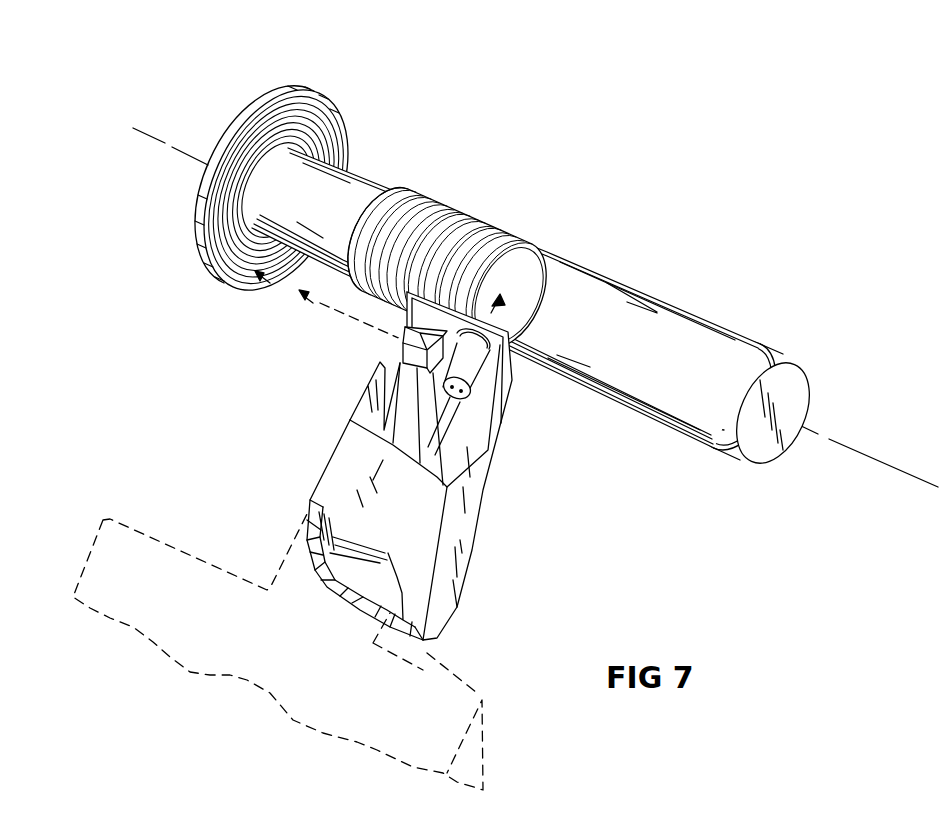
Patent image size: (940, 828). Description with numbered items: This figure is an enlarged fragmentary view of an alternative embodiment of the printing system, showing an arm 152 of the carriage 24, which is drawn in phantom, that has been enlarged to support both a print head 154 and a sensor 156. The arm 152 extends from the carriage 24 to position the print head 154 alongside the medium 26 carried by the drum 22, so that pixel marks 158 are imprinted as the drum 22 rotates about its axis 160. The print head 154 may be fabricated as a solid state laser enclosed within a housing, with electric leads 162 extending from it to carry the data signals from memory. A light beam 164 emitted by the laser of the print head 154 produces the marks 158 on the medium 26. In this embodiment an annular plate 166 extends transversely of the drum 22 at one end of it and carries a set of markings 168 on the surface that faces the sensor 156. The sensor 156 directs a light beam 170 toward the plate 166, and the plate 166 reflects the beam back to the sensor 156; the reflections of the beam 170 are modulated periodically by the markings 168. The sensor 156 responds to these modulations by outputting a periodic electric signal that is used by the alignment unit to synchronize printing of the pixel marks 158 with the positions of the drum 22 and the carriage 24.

The drum 22 is at (371, 175).
The carriage 24 is at (142, 528).
The medium 26 is at (647, 296).
The arm 152 is at (463, 588).
The print head 154 is at (470, 372).
The sensor 156 is at (402, 347).
The pixel marks 158 is at (512, 262).
The axis 160 is at (826, 436).
The electric leads 162 is at (433, 455).
The light beam 164 is at (493, 312).
The annular plate 166 is at (267, 190).
The markings 168 is at (228, 260).
The light beam 170 is at (320, 305).